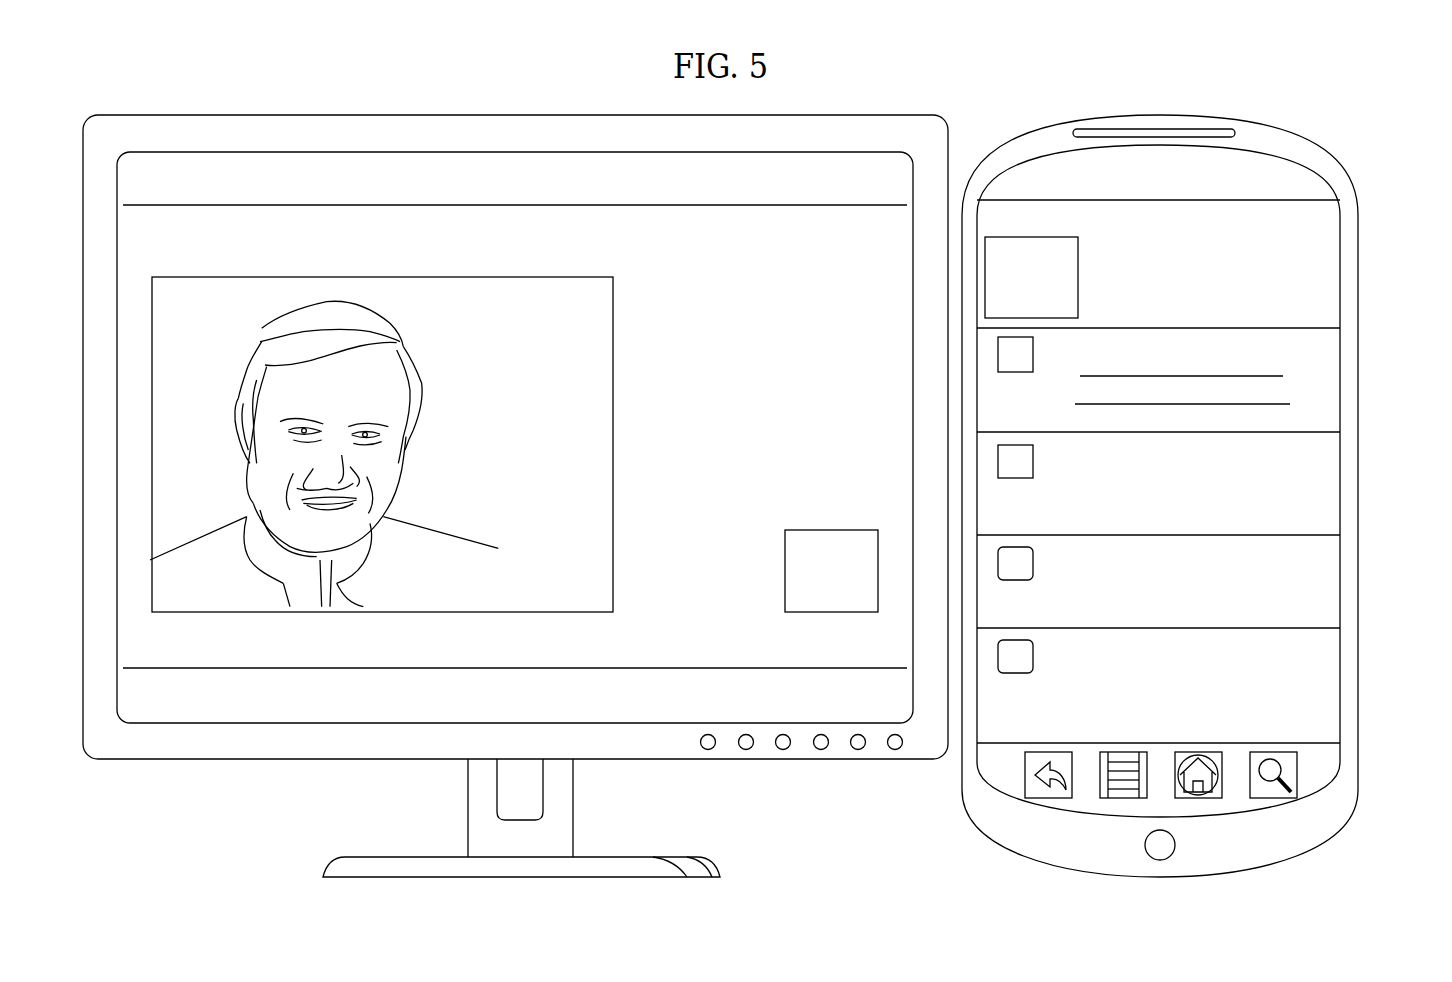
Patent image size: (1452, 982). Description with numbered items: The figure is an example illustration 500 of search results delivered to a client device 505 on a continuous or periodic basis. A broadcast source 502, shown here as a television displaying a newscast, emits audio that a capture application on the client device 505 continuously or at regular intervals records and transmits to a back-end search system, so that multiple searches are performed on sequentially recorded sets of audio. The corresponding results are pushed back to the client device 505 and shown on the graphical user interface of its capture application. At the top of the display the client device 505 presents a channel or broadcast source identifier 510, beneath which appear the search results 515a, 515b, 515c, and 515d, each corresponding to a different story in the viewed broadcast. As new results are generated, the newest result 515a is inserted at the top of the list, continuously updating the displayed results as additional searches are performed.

The illustration 500 is at (1052, 60).
The broadcast source 502 is at (430, 115).
The client device 505 is at (1217, 117).
The channel or broadcast source identifier 510 is at (1325, 272).
The search result 515a is at (1325, 363).
The search result 515b is at (1328, 513).
The search result 515c is at (1327, 588).
The search result 515d is at (1327, 703).